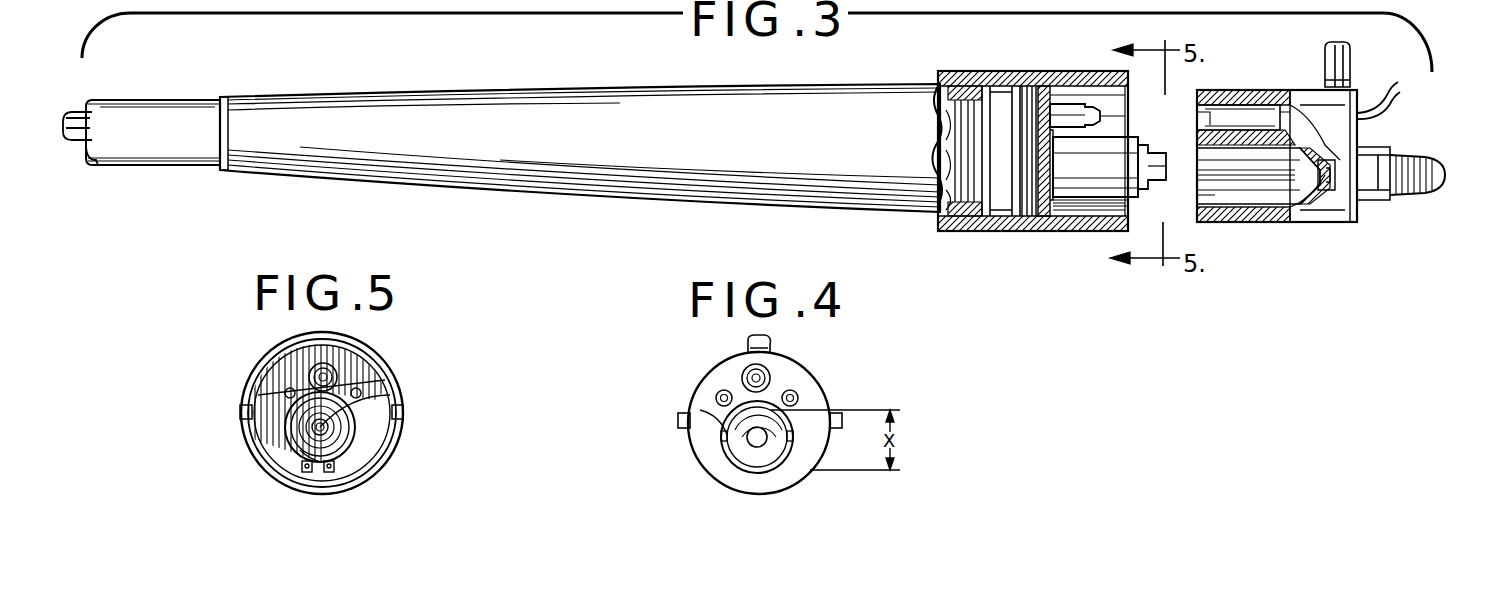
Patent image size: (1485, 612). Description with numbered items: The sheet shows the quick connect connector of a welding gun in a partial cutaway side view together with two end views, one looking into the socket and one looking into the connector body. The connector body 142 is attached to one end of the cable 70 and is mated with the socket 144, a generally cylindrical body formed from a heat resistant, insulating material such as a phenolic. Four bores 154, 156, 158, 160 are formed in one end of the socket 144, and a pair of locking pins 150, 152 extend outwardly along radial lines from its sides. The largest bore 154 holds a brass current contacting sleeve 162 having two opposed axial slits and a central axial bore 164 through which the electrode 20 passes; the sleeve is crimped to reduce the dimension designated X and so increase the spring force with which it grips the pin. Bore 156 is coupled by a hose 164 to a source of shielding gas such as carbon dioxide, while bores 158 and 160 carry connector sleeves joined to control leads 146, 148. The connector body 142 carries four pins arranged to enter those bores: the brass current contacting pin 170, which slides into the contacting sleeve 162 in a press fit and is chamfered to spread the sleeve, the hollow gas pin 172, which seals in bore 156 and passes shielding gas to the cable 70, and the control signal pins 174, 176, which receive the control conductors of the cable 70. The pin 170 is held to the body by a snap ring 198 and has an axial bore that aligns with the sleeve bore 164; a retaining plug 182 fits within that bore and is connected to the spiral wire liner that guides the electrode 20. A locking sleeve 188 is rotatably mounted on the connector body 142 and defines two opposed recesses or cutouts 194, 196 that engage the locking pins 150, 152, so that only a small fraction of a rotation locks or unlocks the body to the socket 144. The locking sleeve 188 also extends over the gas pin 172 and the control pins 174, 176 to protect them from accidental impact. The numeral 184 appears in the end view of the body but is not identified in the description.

In FIG. 3, the cable 70 is at (214, 115).
In FIG. 3, the locking sleeve 188 is at (990, 71).
In FIG. 5, the locking sleeve 188 is at (343, 345).
In FIG. 3, the gas pin 172 is at (1065, 104).
In FIG. 5, the gas pin 172 is at (312, 368).
In FIG. 3, the current contacting pin 170 is at (1112, 148).
In FIG. 5, the current contacting pin 170 is at (328, 405).
In FIG. 3, the retaining plug 182 is at (1168, 170).
In FIG. 5, the retaining plug 182 is at (400, 412).
In FIG. 3, the connector body 142 is at (1003, 183).
In FIG. 5, the connector body 142 is at (370, 432).
In FIG. 3, the snap ring 198 is at (1075, 170).
In FIG. 5, the snap ring 198 is at (340, 455).
In FIG. 3, the socket 144 is at (1235, 95).
In FIG. 4, the socket 144 is at (740, 470).
In FIG. 3, the bore 156 is at (1262, 112).
In FIG. 4, the bore 156 is at (770, 375).
In FIG. 3, the bore 154 is at (1262, 200).
In FIG. 4, the bore 154 is at (770, 470).
In FIG. 3, the current contacting sleeve 162 is at (1225, 207).
In FIG. 4, the current contacting sleeve 162 is at (700, 410).
In FIG. 3, the axial bore / hose 164 is at (1350, 60).
In FIG. 4, the axial bore / hose 164 is at (750, 440).
In FIG. 3, the control lead 146 is at (1398, 86).
In FIG. 3, the control lead 148 is at (1392, 118).
In FIG. 5, the pin 176 is at (285, 389).
In FIG. 5, the pin 174 is at (362, 391).
In FIG. 5, the recess or cutout 196 is at (245, 412).
In FIG. 5, the recess or cutout 194 is at (403, 420).
In FIG. 5, the center contact 184 is at (314, 430).
In FIG. 5, the electrode 20 is at (292, 450).
In FIG. 4, the bore 158 is at (722, 390).
In FIG. 4, the bore 160 is at (798, 396).
In FIG. 4, the locking pin 152 is at (678, 420).
In FIG. 4, the locking pin 150 is at (843, 415).